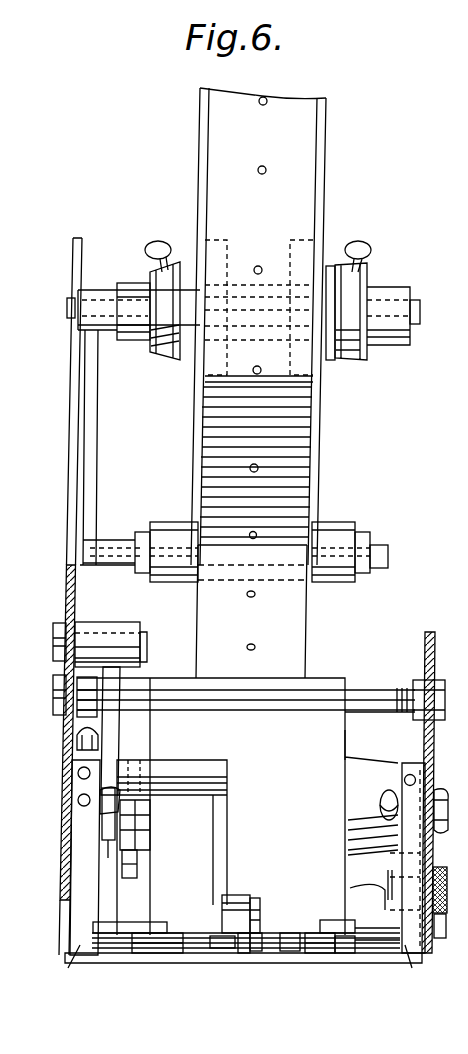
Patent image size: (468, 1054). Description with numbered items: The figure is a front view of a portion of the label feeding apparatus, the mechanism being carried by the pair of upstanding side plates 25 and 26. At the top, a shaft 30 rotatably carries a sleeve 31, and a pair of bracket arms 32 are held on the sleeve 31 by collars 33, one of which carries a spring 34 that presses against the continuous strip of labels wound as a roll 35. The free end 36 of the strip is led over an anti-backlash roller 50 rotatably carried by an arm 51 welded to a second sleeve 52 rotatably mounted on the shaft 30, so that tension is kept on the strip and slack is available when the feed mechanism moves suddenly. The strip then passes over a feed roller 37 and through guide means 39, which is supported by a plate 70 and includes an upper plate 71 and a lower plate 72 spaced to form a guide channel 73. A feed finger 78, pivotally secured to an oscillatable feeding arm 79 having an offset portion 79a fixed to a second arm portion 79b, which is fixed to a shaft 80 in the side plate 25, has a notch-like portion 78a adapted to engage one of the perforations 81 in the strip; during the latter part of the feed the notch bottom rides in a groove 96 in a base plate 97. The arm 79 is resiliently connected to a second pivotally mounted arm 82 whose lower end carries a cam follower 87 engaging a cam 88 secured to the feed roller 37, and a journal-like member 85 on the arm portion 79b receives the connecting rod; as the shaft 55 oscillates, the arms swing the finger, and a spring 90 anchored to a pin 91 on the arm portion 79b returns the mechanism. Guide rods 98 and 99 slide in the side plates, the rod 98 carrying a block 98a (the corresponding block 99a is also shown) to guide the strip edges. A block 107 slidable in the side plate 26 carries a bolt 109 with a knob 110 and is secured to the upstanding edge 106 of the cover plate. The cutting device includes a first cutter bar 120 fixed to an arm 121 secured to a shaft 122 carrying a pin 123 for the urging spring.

The roll 35 is at (304, 118).
The bracket arms 32 is at (201, 164).
The perforations 81 is at (261, 175).
The spring 34 is at (331, 262).
The shaft 30 is at (67, 300).
The second sleeve 52 is at (105, 290).
The collars 33 is at (163, 360).
The sleeve 31 is at (376, 290).
The arm 51 is at (96, 440).
The anti-backlash roller 50 is at (339, 532).
The free end 36 is at (306, 615).
The side plate 25 is at (74, 602).
The shaft 80 is at (150, 640).
The offset portion 79a is at (181, 763).
The second arm portion 79b is at (113, 690).
The pin 91 is at (95, 741).
The pin 123 is at (90, 795).
The second pivotally mounted arm 82 is at (108, 842).
The cam follower 87 is at (138, 836).
The cam 88 is at (138, 867).
The shaft 122 is at (118, 792).
The oscillatable feeding arm 79 is at (222, 785).
The feed finger 78 is at (240, 895).
The feed roller 37 is at (336, 748).
The side plate 26 is at (425, 658).
The block 107 is at (388, 880).
The bolt 109 is at (352, 888).
The knob 110 is at (442, 916).
The upper plate 71 is at (193, 930).
The first cutter bar 120 is at (390, 963).
The arm 121 is at (80, 950).
The guide rod 99 is at (114, 925).
The block 99a is at (160, 953).
The guide means 39 is at (187, 969).
The groove 96 is at (230, 952).
The notch-like portion 78a is at (245, 955).
The base plate 97 is at (262, 953).
The guide channel 73 is at (295, 928).
The lower plate 72 is at (292, 953).
The guide rod 98 is at (345, 923).
The block 98a is at (322, 955).
The plate 70 is at (348, 955).
The vertically upstanding edge 106 is at (385, 922).
The shaft 55 is at (460, 351).
The spring 90 is at (460, 394).
The journal-like member 85 is at (460, 529).